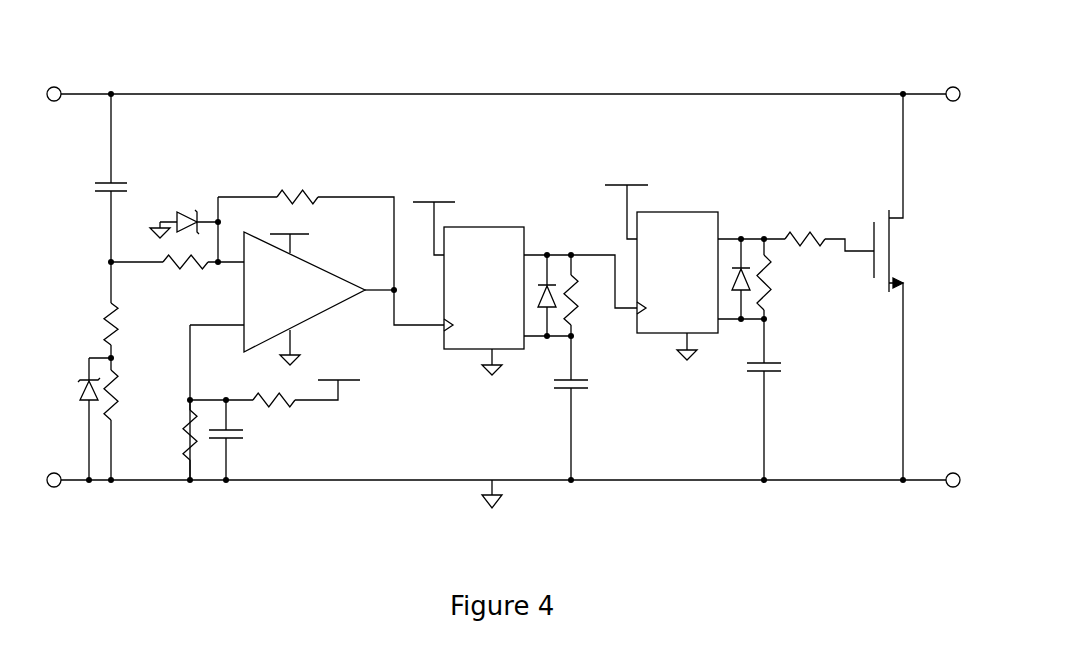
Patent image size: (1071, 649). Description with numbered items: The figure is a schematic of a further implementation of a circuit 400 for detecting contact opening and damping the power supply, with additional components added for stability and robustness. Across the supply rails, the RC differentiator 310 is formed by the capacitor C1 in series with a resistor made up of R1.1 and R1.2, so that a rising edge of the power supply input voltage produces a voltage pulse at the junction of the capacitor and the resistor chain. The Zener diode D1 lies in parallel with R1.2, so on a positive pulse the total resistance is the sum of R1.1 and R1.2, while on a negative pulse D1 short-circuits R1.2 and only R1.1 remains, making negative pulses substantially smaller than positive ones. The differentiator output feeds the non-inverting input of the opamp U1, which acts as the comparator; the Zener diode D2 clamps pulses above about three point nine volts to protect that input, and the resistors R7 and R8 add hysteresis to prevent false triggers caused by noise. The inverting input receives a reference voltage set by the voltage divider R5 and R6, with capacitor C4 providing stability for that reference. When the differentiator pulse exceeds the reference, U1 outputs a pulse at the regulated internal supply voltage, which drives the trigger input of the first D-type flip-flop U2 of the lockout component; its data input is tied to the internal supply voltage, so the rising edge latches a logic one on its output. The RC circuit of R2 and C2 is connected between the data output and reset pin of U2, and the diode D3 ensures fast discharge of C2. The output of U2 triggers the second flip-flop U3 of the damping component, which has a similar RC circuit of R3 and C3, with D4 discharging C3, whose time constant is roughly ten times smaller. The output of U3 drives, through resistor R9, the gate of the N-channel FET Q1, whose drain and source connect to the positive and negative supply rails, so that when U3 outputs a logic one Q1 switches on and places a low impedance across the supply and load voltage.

The circuit 400 is at (88, 57).
The RC differentiator circuit 310 is at (70, 488).
The capacitor C1 is at (115, 178).
The Zener diode D1 is at (85, 419).
The Zener diode D2 is at (184, 217).
The silicon diode D3 is at (541, 295).
The silicon diode D4 is at (735, 279).
The resistor R1.1 is at (128, 310).
The resistor R1.2 is at (128, 419).
The resistor R2 is at (578, 295).
The resistor R3 is at (771, 280).
The resistor R5 is at (275, 394).
The resistor R6 is at (178, 440).
The resistor R7 is at (331, 249).
The resistor R8 is at (177, 272).
The resistor R9 is at (829, 234).
The capacitor C2 is at (574, 408).
The capacitor C3 is at (766, 399).
The capacitor C4 is at (229, 440).
The operational amplifier U1 is at (292, 348).
The first flip-flop U2 is at (525, 279).
The second flip-flop U3 is at (695, 264).
The N-channel field effect transistor Q1 is at (888, 287).